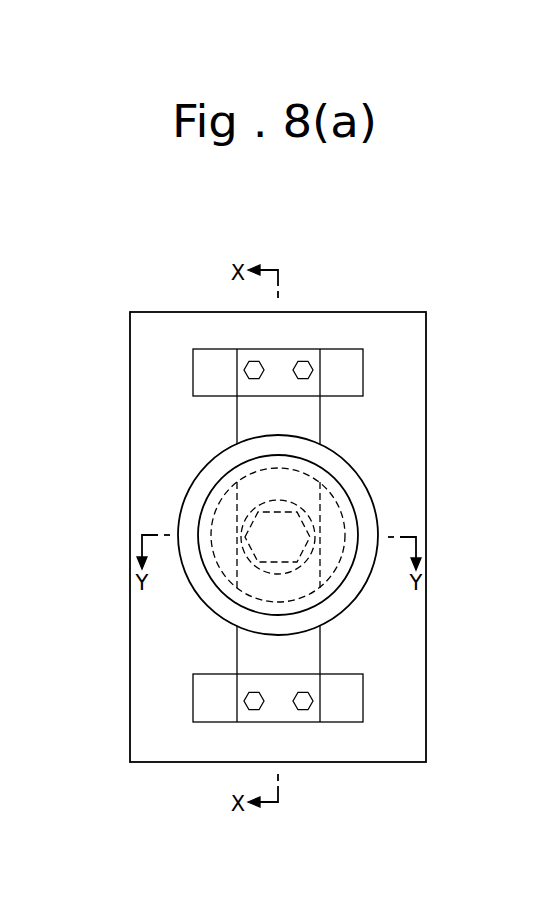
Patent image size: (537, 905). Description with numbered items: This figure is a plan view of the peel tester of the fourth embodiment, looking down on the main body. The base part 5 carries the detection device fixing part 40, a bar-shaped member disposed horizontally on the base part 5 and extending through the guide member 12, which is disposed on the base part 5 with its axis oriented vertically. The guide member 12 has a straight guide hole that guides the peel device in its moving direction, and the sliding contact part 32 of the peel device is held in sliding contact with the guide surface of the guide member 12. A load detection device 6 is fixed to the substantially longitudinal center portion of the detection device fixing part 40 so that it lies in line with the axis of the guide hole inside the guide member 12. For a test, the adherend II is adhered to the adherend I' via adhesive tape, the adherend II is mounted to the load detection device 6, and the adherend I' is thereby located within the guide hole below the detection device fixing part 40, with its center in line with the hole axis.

The base part 5 is at (345, 342).
The detection device fixing part 40 is at (298, 355).
The sliding contact part 32 is at (358, 516).
The guide member 12 is at (350, 483).
The load detection device 6 is at (277, 522).
The adherend II is at (250, 520).
The adherend I' is at (144, 500).